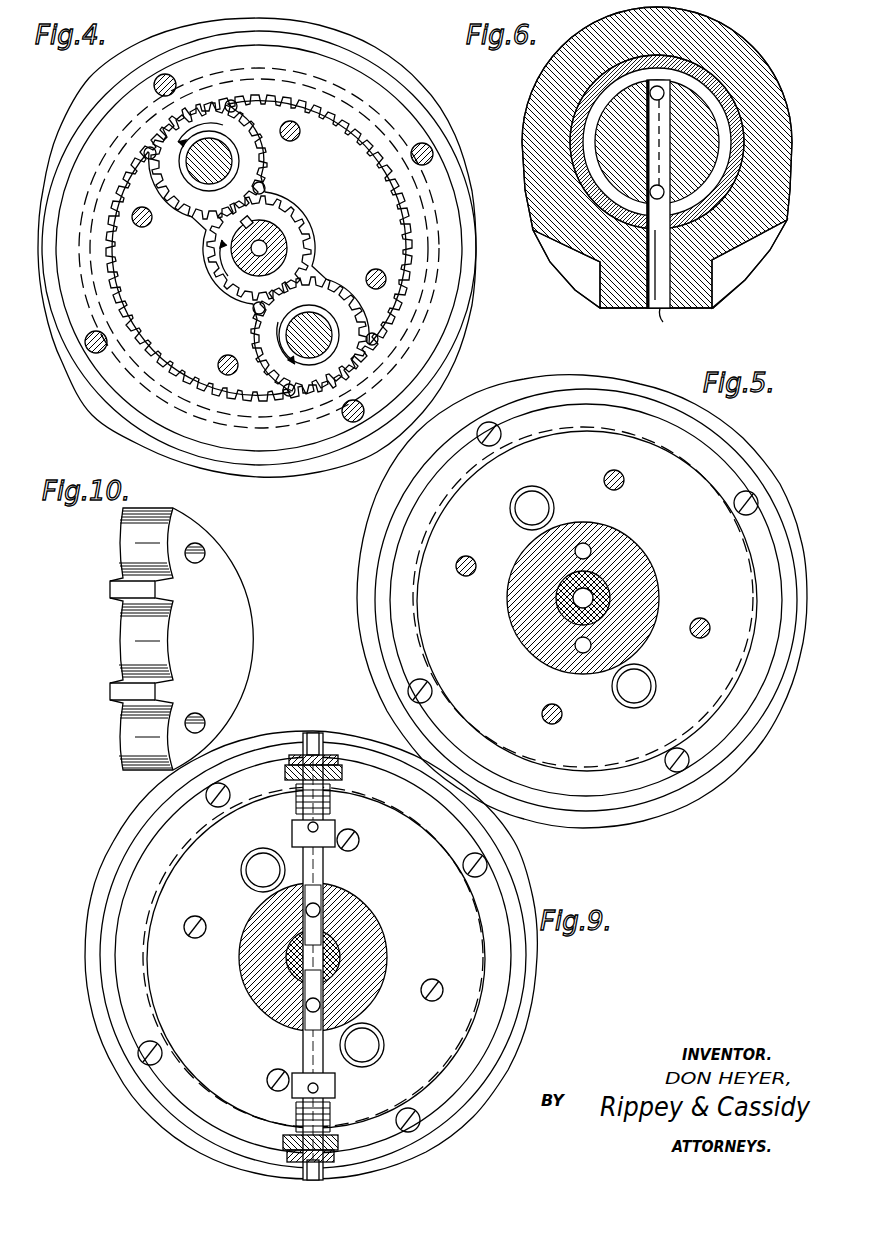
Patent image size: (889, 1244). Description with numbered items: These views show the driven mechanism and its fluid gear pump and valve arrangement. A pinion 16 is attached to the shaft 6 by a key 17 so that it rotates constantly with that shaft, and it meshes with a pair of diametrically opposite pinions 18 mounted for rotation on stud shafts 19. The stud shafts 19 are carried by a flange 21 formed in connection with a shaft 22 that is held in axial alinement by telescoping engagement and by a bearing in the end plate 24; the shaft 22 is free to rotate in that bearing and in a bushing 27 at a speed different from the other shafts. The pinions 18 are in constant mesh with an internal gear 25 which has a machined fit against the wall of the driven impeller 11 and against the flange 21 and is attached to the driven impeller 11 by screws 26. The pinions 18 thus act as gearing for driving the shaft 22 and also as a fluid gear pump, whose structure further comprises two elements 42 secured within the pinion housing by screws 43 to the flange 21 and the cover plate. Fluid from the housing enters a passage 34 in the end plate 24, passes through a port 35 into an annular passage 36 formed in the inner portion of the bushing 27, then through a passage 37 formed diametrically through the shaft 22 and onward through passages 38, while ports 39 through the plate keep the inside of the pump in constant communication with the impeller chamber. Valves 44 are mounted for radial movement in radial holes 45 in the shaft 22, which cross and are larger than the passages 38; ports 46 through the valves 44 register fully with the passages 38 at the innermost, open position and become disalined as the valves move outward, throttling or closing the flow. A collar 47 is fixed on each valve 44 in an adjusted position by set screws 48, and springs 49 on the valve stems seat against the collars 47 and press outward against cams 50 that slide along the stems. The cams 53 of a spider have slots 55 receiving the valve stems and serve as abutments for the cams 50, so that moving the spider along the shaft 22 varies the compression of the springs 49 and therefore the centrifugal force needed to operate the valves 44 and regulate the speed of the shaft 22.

In FIG. 4, the shaft 6 is at (287, 240).
In FIG. 5, the shaft 6 is at (600, 597).
In FIG. 9, the shaft 6 is at (325, 957).
In FIG. 4, the driven impeller 11 is at (463, 333).
In FIG. 5, the driven impeller 11 is at (627, 821).
In FIG. 9, the driven impeller 11 is at (100, 1024).
In FIG. 4, the pinion 16 is at (287, 212).
In FIG. 4, the key 17 is at (252, 223).
In FIG. 4, the pinions 18 is at (247, 164).
In FIG. 4, the stud shafts 19 is at (230, 168).
In FIG. 5, the stud shafts 19 is at (551, 508).
In FIG. 9, the stud shafts 19 is at (241, 870).
In FIG. 5, the flange 21 is at (562, 764).
In FIG. 9, the flange 21 is at (465, 926).
In FIG. 6, the shaft 22 is at (711, 118).
In FIG. 5, the shaft 22 is at (641, 572).
In FIG. 9, the shaft 22 is at (366, 925).
In FIG. 6, the end plate 24 is at (752, 250).
In FIG. 4, the internal gear 25 is at (403, 116).
In FIG. 5, the internal gear 25 is at (647, 783).
In FIG. 9, the internal gear 25 is at (118, 980).
In FIG. 4, the screws 26 is at (165, 80).
In FIG. 5, the screws 26 is at (485, 446).
In FIG. 9, the screws 26 is at (488, 865).
In FIG. 6, the bushing 27 is at (571, 160).
In FIG. 6, the passage 34 is at (670, 325).
In FIG. 6, the port 35 is at (656, 224).
In FIG. 6, the annular passage 36 is at (594, 182).
In FIG. 6, the passage 37 is at (664, 160).
In FIG. 6, the passages 38 is at (663, 92).
In FIG. 5, the passages 38 is at (591, 548).
In FIG. 4, the ports 39 is at (232, 100).
In FIG. 4, the elements 42 is at (395, 246).
In FIG. 10, the elements 42 is at (240, 600).
In FIG. 4, the screws 43 is at (144, 228).
In FIG. 5, the screws 43 is at (466, 577).
In FIG. 9, the screws 43 is at (360, 840).
In FIG. 9, the valves 44 is at (324, 870).
In FIG. 9, the radial holes 45 is at (303, 910).
In FIG. 9, the ports 46 is at (320, 908).
In FIG. 9, the collar 47 is at (292, 836).
In FIG. 9, the set screws 48 is at (308, 828).
In FIG. 9, the springs 49 is at (333, 806).
In FIG. 9, the cams 50 is at (343, 772).
In FIG. 9, the cams 53 is at (337, 756).
In FIG. 9, the slots 55 is at (308, 736).